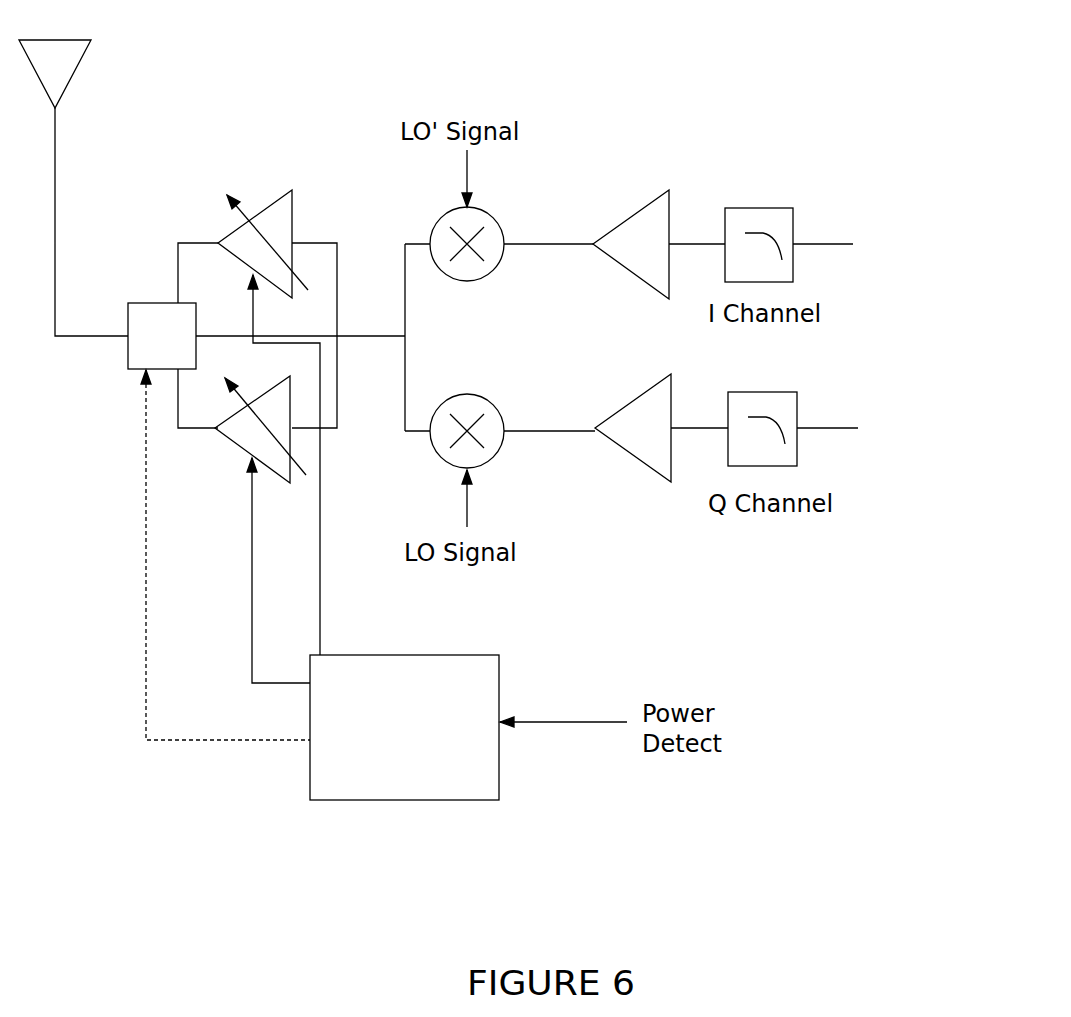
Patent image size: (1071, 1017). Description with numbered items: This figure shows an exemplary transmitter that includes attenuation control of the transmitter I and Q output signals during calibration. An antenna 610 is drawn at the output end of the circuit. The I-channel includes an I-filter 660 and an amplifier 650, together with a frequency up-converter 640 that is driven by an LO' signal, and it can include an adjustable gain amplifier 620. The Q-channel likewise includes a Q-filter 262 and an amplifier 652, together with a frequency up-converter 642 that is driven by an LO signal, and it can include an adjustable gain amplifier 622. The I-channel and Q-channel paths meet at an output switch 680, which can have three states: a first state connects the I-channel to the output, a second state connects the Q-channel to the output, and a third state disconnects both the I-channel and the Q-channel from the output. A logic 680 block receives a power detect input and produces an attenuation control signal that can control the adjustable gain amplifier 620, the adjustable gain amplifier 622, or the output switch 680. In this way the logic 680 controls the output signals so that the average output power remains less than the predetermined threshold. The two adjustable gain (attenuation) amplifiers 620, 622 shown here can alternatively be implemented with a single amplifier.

The antenna 610 is at (70, 67).
The adjustable gain amplifier 620 is at (277, 215).
The adjustable gain amplifier 622 is at (245, 432).
The frequency up-converter 640 is at (492, 230).
The frequency up-converter 642 is at (445, 442).
The amplifier 650 is at (620, 230).
The amplifier 652 is at (644, 433).
The I-filter 660 is at (762, 215).
The low pass filter 262 is at (777, 455).
The output switch / logic 680 is at (160, 318).